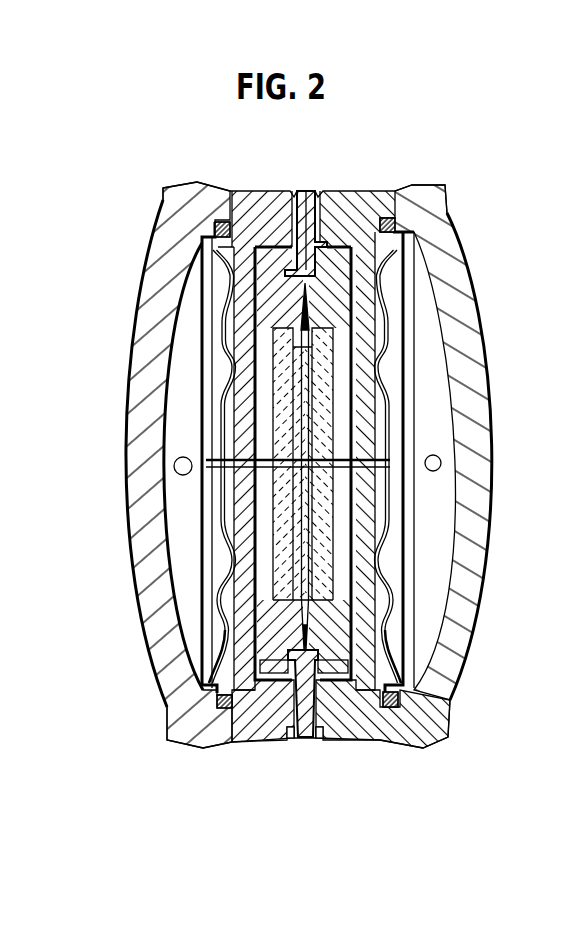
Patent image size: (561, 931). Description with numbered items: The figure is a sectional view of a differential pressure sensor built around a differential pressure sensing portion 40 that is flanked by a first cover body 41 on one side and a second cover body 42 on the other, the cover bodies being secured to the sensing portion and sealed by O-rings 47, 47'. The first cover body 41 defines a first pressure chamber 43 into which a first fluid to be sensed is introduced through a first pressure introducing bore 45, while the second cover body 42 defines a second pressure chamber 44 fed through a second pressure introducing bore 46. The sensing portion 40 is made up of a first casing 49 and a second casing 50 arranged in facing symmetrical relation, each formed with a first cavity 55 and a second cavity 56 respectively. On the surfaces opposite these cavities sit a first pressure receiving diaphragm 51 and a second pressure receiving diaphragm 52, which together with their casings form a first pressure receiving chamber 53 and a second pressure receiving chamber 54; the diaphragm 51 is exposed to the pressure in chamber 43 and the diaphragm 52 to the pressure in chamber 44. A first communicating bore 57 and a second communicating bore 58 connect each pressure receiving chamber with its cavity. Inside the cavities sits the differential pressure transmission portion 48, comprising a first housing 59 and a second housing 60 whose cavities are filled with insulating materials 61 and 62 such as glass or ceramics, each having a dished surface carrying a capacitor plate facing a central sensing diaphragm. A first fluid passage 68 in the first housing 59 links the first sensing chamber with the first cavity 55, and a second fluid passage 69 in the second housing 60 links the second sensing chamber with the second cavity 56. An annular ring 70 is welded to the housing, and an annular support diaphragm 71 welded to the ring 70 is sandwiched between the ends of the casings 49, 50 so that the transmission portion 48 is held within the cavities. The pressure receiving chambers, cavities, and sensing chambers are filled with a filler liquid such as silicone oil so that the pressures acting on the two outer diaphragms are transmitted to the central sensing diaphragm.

The differential pressure sensing portion 40 is at (278, 178).
The first cover body 41 is at (141, 281).
The second cover body 42 is at (482, 334).
The first pressure chamber 43 is at (183, 332).
The second pressure chamber 44 is at (489, 456).
The first pressure introducing bore 45 is at (174, 465).
The second pressure introducing bore 46 is at (441, 462).
The O-ring 47 is at (180, 461).
The O-ring 47' is at (430, 460).
The differential pressure transmission portion 48 is at (334, 241).
The first casing 49 is at (256, 191).
The second casing 50 is at (352, 189).
The first pressure receiving diaphragm 51 is at (232, 562).
The second pressure receiving diaphragm 52 is at (401, 553).
The first pressure receiving chamber 53 is at (244, 512).
The second pressure receiving chamber 54 is at (372, 520).
The first cavity 55 is at (245, 357).
The second cavity 56 is at (385, 367).
The first communicating bore 57 is at (233, 447).
The second communicating bore 58 is at (388, 452).
The first housing 59 is at (300, 621).
The second housing 60 is at (337, 623).
The insulating material 61 is at (268, 574).
The insulating material 62 is at (345, 575).
The first fluid passage 68 is at (283, 470).
The second fluid passage 69 is at (340, 467).
The annular ring 70 is at (277, 676).
The annular support diaphragm 71 is at (317, 700).